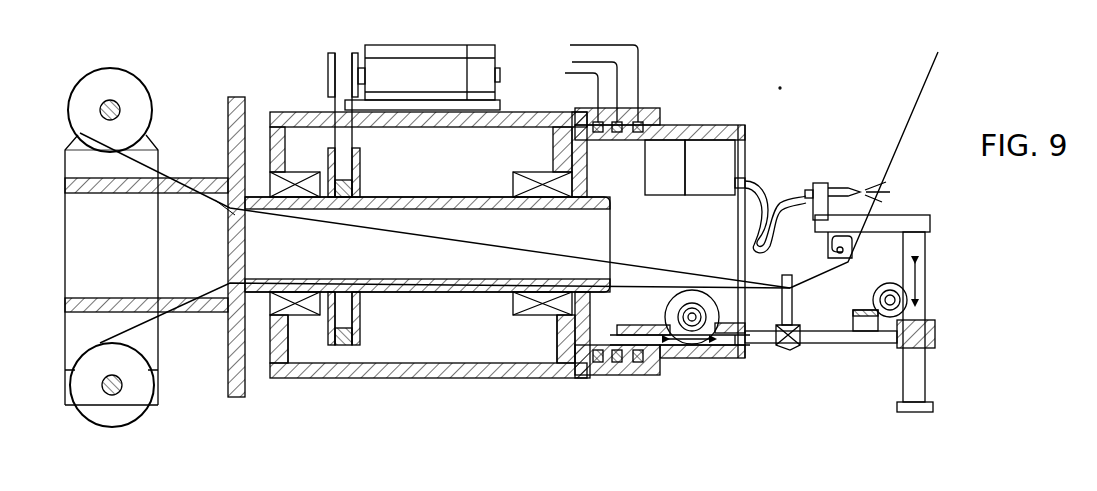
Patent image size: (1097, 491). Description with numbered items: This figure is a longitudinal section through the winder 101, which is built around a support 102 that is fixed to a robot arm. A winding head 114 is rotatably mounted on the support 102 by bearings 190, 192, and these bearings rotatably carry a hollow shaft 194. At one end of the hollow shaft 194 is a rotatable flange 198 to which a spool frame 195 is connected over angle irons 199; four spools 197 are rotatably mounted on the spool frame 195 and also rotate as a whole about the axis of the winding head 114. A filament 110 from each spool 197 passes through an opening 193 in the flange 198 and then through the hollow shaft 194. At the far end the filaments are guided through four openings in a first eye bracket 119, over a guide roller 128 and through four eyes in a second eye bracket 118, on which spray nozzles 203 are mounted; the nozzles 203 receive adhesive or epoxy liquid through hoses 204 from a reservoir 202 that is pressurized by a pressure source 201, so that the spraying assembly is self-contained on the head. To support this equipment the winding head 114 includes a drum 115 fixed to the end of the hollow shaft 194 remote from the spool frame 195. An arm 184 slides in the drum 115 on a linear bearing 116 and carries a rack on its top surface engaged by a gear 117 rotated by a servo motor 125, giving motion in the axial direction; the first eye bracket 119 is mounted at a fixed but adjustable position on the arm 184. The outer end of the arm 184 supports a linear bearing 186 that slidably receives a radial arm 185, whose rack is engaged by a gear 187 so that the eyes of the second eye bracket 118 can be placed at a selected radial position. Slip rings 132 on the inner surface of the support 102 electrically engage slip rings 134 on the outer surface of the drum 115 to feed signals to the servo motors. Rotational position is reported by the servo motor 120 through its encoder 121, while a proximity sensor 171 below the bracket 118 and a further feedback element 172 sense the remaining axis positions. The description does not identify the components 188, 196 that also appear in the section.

The winder 101 is at (780, 86).
The support 102 is at (470, 373).
The filament 110 is at (903, 136).
The winding head 114 is at (696, 355).
The drum 115 is at (722, 350).
The linear bearing 116 is at (742, 328).
The gear 117 is at (680, 318).
The second eye bracket 118 is at (890, 216).
The first eye bracket 119 is at (775, 350).
The servo motor 120 is at (340, 62).
The encoder 121 is at (487, 62).
The servo motor 125 is at (720, 255).
The guide roller 128 is at (860, 282).
The slip rings 132 is at (638, 110).
The slip rings 134 is at (638, 364).
The proximity sensor 171 is at (735, 348).
The feedback element 172 is at (862, 333).
The arm 184 is at (822, 345).
The radial arm 185 is at (922, 312).
The linear bearing 186 is at (938, 336).
The gear 187 is at (892, 318).
The drive shaft 188 is at (345, 140).
The bearing 190 is at (320, 316).
The bearing 192 is at (537, 313).
The opening 193 is at (220, 205).
The hollow shaft 194 is at (436, 290).
The spool frame 195 is at (147, 150).
The bearing 196 is at (362, 178).
The spool 197 is at (135, 408).
The rotatable flange 198 is at (242, 407).
The angle irons 199 is at (177, 303).
The pressure source 201 is at (672, 152).
The reservoir 202 is at (715, 152).
The spray nozzle 203 is at (835, 183).
The hose 204 is at (770, 203).